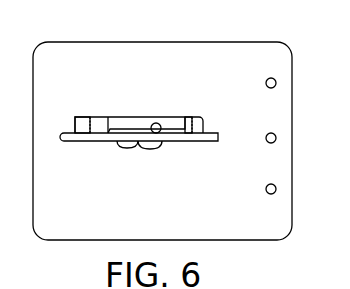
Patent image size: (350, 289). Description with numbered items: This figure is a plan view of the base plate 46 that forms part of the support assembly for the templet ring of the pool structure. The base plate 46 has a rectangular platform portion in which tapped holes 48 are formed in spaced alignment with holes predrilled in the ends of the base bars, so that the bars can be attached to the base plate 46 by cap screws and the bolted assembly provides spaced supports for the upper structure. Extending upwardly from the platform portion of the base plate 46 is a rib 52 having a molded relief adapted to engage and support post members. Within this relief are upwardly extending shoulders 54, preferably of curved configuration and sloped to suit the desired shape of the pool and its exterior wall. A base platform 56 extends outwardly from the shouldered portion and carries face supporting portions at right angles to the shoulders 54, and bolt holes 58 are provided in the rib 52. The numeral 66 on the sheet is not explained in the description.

The base plate 46 is at (242, 54).
The tapped holes 48 is at (276, 82).
The rib 52 is at (114, 104).
The shoulders 54 is at (160, 124).
The base platform 56 is at (163, 140).
The bolt holes 58 is at (87, 127).
The sheet reference 66 is at (349, 268).